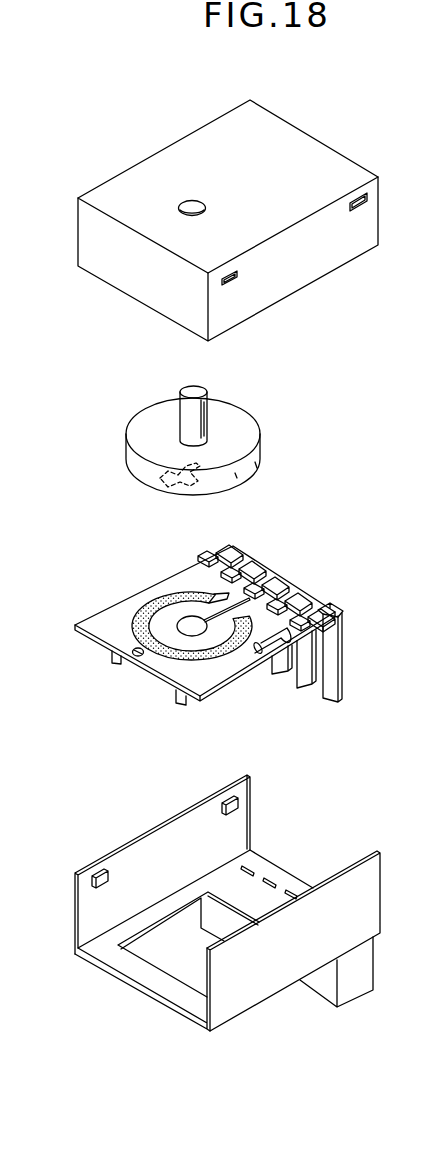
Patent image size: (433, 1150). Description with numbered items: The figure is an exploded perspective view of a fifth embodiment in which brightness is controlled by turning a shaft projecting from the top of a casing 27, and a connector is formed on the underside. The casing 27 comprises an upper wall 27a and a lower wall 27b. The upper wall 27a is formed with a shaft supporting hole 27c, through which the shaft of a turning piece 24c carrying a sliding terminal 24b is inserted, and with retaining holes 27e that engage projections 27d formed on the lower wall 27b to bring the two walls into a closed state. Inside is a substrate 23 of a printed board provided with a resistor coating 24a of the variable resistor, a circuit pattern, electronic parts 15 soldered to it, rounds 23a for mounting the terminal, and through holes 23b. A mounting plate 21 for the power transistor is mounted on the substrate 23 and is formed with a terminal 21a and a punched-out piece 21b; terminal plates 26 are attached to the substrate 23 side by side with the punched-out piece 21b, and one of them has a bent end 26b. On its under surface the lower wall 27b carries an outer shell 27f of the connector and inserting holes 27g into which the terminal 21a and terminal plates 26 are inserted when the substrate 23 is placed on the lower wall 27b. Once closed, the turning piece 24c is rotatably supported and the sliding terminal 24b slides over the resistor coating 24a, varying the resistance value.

The electronic parts 15 is at (268, 645).
The mounting plate 21 is at (142, 673).
The terminal 21a is at (284, 661).
The punched-out piece 21b is at (270, 588).
The substrate 23 is at (135, 602).
The rounds 23a is at (315, 641).
The through holes 23b is at (117, 655).
The resistor coating 24a is at (197, 405).
The sliding terminal 24b is at (188, 464).
The turning piece 24c is at (233, 440).
The terminal plates 26 is at (334, 670).
The bent end of terminal plate 26b is at (313, 610).
The casing 27 is at (350, 157).
The upper wall 27a is at (280, 137).
The lower wall 27b is at (367, 880).
The shaft supporting hole 27c is at (190, 200).
The projections 27d is at (220, 793).
The retaining holes 27e is at (232, 283).
The outer shell 27f is at (357, 982).
The inserting holes 27g is at (254, 867).